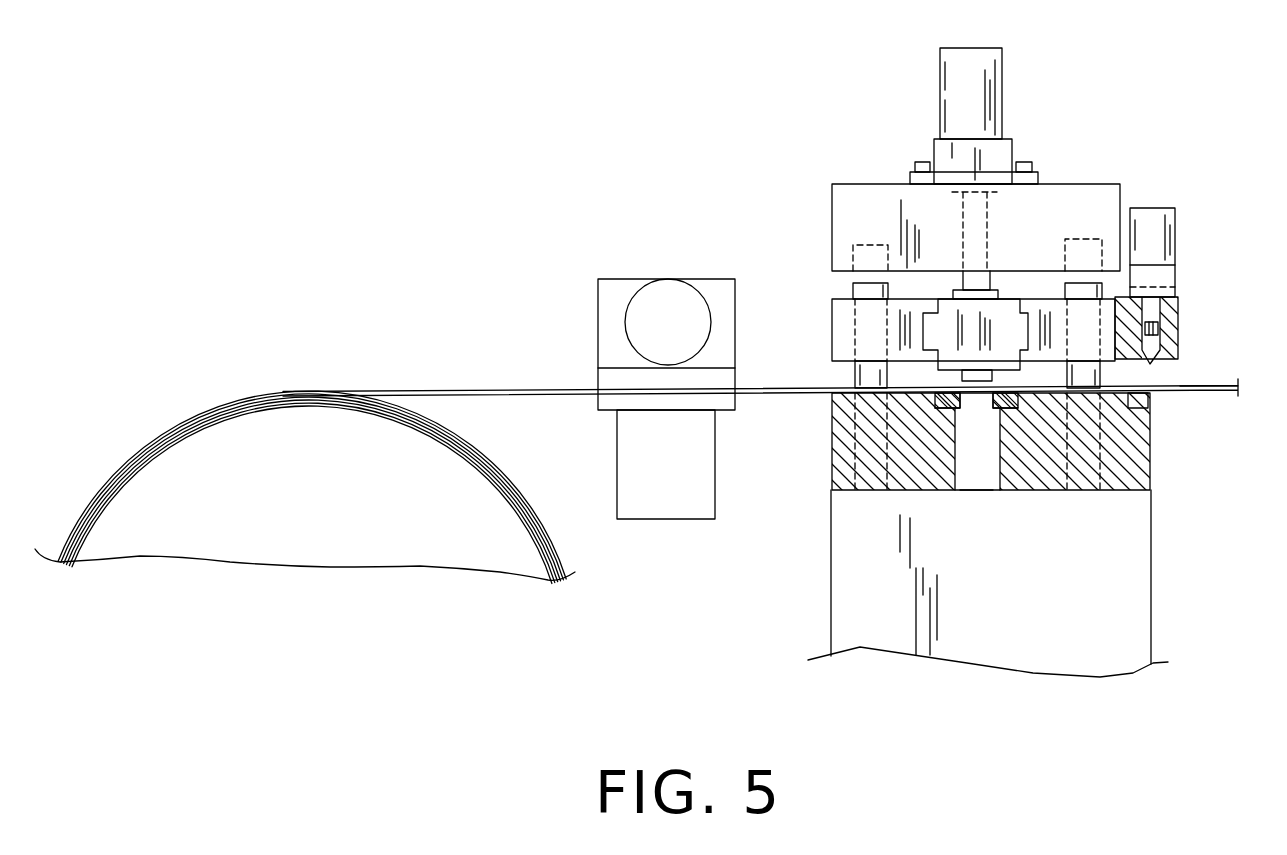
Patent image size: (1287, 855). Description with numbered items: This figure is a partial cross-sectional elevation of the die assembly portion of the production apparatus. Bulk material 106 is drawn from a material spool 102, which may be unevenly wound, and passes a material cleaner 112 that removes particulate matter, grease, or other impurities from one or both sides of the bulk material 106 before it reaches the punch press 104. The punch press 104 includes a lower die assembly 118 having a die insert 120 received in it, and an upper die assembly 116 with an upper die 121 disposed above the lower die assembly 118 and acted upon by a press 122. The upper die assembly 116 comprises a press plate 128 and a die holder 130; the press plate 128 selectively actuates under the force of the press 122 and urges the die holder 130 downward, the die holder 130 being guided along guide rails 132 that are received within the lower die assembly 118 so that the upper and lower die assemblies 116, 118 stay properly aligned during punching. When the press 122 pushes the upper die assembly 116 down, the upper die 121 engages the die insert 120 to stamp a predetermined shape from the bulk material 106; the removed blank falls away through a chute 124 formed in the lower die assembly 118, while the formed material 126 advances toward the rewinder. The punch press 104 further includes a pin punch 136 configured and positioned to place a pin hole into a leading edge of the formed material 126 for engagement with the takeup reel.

The material spool 102 is at (207, 406).
The punch press 104 is at (833, 122).
The bulk material 106 is at (478, 388).
The material cleaner 112 is at (620, 287).
The upper die assembly 116 is at (1040, 157).
The lower die assembly 118 is at (818, 448).
The die insert 120 is at (970, 410).
The upper die 121 is at (935, 322).
The press 122 is at (993, 80).
The chute 124 is at (980, 468).
The formed material 126 is at (1182, 391).
The press plate 128 is at (1115, 197).
The die holder 130 is at (837, 333).
The guide rails 132 is at (858, 373).
The pin punch 136 is at (1173, 243).